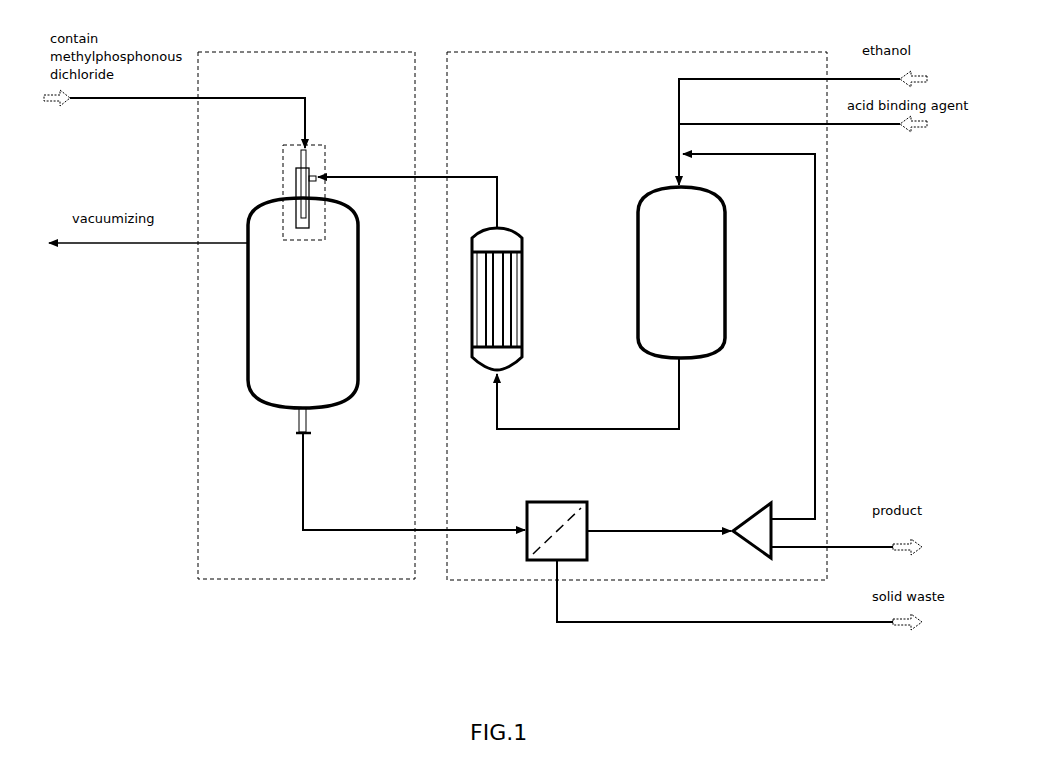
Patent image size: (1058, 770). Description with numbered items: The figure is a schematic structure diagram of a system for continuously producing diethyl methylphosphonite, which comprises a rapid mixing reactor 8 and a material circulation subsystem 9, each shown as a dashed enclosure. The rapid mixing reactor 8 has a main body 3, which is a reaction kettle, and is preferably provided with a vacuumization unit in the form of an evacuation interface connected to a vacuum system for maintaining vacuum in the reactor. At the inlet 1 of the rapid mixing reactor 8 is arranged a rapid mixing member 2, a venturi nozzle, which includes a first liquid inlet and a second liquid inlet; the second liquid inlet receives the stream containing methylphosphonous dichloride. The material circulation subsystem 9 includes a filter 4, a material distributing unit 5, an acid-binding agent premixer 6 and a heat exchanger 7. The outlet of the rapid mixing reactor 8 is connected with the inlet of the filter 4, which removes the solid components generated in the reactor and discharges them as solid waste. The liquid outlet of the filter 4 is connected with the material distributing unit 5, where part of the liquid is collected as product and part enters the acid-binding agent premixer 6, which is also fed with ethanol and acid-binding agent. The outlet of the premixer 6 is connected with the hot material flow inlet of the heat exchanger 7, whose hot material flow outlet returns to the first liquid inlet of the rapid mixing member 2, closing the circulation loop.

The inlet of the rapid mixing reactor 1 is at (395, 151).
The rapid mixing member 2 is at (283, 170).
The main body of the rapid mixing reactor 3 is at (272, 407).
The filter 4 is at (557, 502).
The material distributing unit 5 is at (752, 547).
The acid-binding agent premixer 6 is at (725, 212).
The heat exchanger 7 is at (512, 230).
The rapid mixing reactor 8 is at (345, 52).
The material circulation subsystem 9 is at (765, 52).